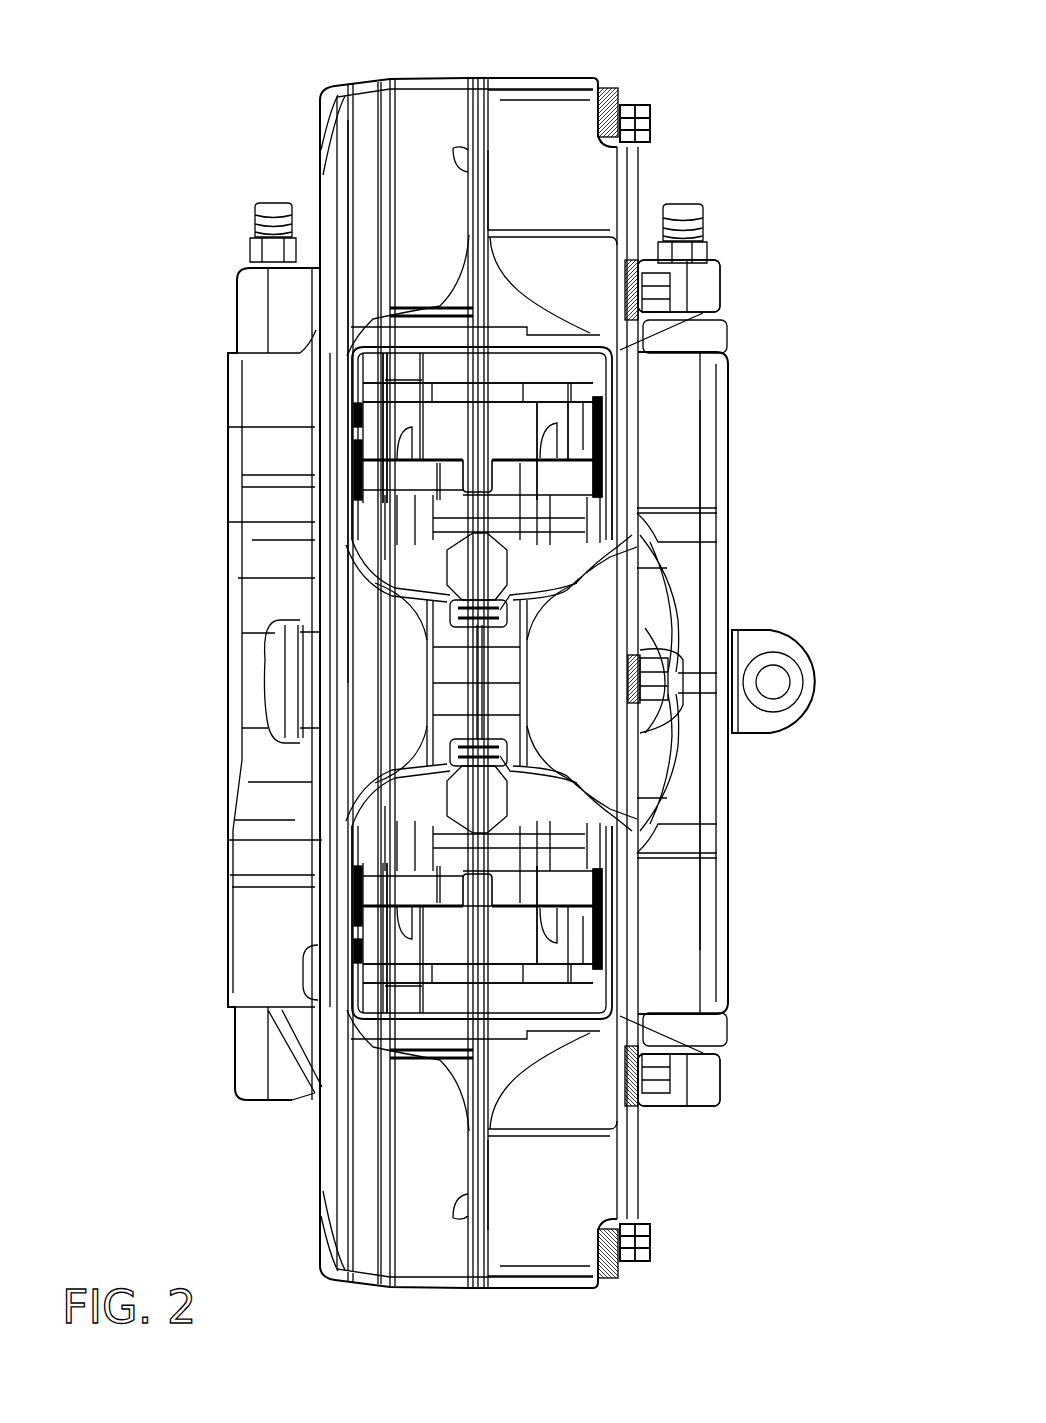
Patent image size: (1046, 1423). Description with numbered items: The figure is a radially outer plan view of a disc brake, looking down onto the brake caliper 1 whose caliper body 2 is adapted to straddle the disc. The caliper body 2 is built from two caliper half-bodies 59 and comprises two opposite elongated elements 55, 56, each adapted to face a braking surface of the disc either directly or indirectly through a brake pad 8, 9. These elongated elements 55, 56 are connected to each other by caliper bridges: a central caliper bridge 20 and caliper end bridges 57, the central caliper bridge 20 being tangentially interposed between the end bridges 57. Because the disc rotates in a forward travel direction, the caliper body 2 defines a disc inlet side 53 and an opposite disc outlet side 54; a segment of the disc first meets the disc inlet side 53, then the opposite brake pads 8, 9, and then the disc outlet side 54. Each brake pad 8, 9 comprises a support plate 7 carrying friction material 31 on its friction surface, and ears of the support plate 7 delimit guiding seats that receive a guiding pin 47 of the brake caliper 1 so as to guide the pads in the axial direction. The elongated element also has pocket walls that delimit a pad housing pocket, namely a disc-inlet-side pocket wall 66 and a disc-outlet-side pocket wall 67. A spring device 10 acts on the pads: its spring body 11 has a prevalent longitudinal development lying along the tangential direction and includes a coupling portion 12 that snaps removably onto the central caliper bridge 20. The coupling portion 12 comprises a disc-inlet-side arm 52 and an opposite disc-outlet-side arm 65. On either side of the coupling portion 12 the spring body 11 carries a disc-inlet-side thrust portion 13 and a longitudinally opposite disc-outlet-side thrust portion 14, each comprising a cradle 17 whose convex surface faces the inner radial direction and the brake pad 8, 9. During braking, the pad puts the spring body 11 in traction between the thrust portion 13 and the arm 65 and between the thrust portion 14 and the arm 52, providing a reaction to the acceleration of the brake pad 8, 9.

The brake caliper 1 is at (778, 148).
The caliper body 2 is at (435, 110).
The support plate 7 is at (380, 413).
The brake pad 8 is at (590, 376).
The brake pad 9 is at (410, 352).
The spring device 10 is at (517, 567).
The spring body 11 is at (470, 842).
The coupling portion 12 is at (300, 699).
The disc-inlet-side thrust portion 13 is at (507, 472).
The disc-outlet-side thrust portion 14 is at (560, 917).
The cradle 17 is at (387, 477).
The central caliper bridge 20 is at (525, 680).
The friction material 31 is at (407, 952).
The guiding pin 47 is at (410, 392).
The disc-inlet-side arm 52 is at (447, 613).
The disc inlet side 53 is at (525, 98).
The disc outlet side 54 is at (544, 1272).
The elongated element 55 is at (700, 922).
The elongated element 56 is at (297, 1103).
The caliper end bridge 57 is at (545, 172).
The caliper half-body 59 is at (368, 103).
The disc-outlet-side arm 65 is at (445, 765).
The disc-inlet-side pocket wall 66 is at (383, 317).
The disc-outlet-side pocket wall 67 is at (420, 1055).